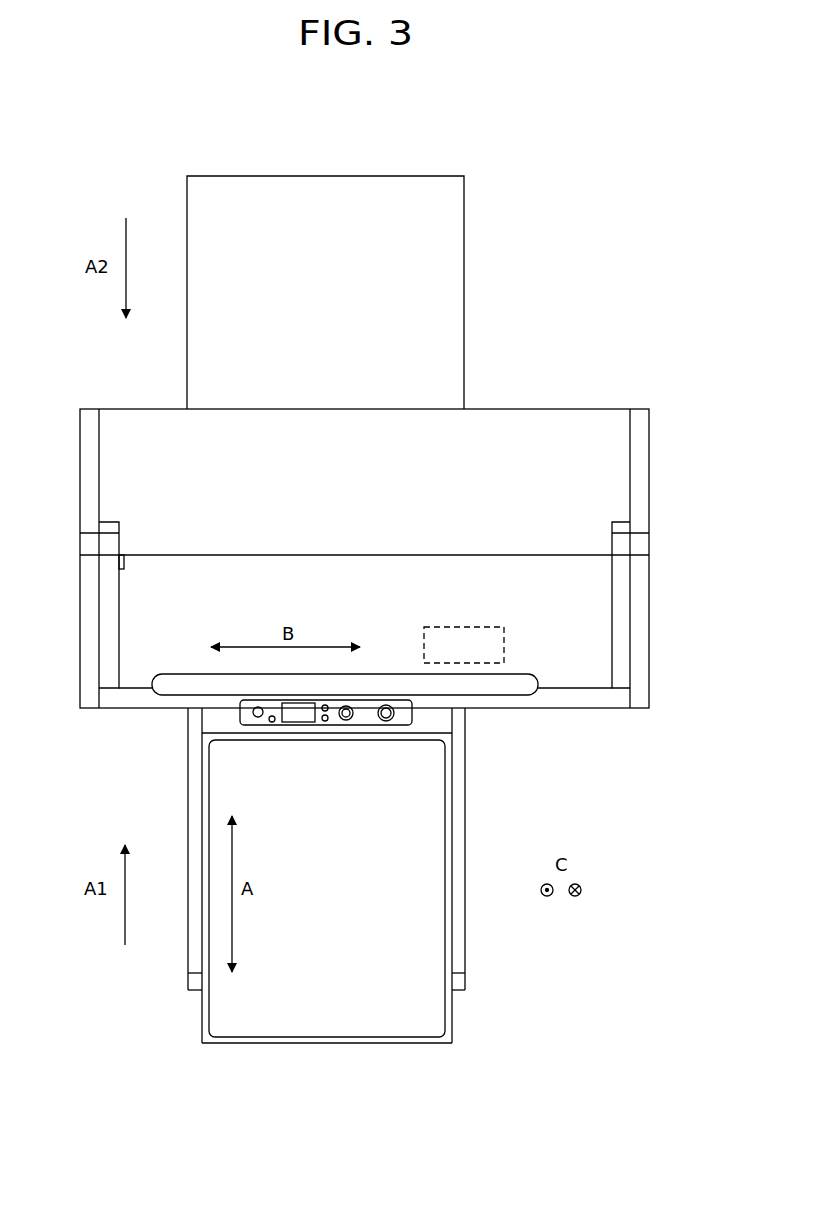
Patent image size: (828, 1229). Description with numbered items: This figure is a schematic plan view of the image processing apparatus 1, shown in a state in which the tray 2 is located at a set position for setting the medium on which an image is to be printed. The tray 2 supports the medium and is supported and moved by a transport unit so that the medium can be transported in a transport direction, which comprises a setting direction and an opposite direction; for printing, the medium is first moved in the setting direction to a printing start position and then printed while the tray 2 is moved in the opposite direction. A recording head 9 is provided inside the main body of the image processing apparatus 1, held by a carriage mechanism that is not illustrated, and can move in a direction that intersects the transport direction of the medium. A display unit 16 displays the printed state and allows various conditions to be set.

The image processing apparatus 1 is at (584, 186).
The tray 2 is at (385, 993).
The recording head 9 is at (477, 672).
The display unit 16 is at (300, 720).